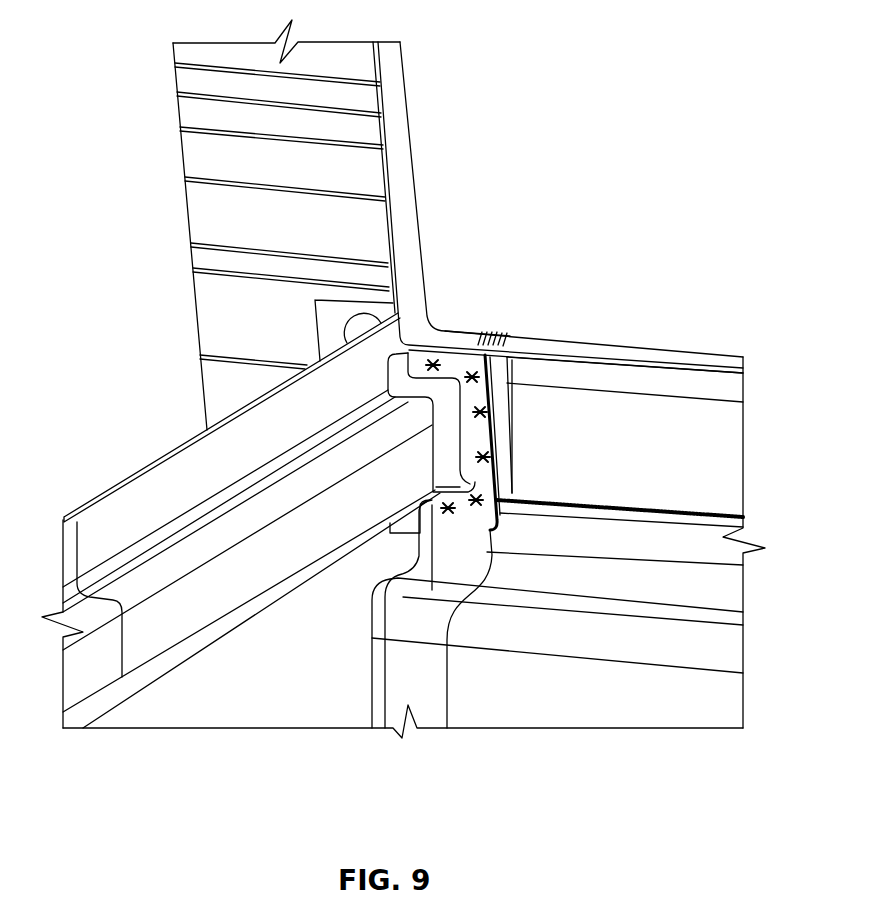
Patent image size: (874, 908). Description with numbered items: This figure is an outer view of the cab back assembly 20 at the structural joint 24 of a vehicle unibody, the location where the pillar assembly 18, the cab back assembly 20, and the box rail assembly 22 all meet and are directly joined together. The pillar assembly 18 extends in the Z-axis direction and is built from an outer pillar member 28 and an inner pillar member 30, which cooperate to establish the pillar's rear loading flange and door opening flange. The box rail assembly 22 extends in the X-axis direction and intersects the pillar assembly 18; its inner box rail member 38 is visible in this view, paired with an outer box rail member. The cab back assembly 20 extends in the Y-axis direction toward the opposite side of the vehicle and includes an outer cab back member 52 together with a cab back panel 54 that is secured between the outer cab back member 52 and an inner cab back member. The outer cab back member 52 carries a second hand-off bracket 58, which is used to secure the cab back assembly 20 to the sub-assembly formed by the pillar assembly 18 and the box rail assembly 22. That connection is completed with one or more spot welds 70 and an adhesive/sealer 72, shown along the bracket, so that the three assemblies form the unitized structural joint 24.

The pillar assembly 18 is at (163, 105).
The cab back assembly 20 is at (222, 697).
The box rail assembly 22 is at (662, 351).
The structural joint 24 is at (492, 320).
The outer pillar member 28 is at (397, 112).
The inner pillar member 30 is at (210, 215).
The inner box rail member 38 is at (727, 457).
The outer cab back member 52 is at (85, 683).
The cab back panel 54 is at (262, 692).
The second hand-off bracket 58 is at (492, 512).
The spot welds 70 is at (433, 363).
The adhesive/sealer 72 is at (487, 430).